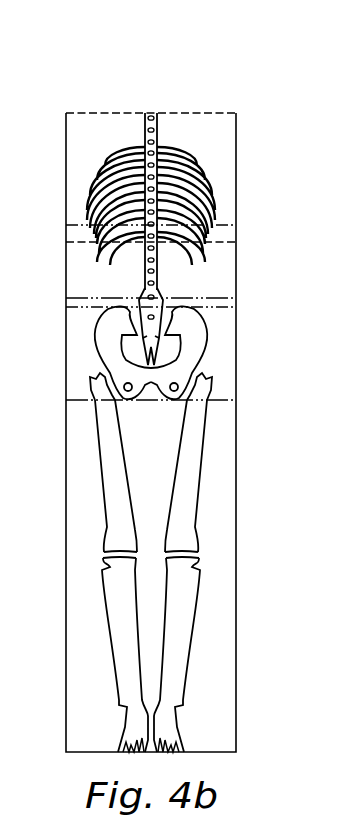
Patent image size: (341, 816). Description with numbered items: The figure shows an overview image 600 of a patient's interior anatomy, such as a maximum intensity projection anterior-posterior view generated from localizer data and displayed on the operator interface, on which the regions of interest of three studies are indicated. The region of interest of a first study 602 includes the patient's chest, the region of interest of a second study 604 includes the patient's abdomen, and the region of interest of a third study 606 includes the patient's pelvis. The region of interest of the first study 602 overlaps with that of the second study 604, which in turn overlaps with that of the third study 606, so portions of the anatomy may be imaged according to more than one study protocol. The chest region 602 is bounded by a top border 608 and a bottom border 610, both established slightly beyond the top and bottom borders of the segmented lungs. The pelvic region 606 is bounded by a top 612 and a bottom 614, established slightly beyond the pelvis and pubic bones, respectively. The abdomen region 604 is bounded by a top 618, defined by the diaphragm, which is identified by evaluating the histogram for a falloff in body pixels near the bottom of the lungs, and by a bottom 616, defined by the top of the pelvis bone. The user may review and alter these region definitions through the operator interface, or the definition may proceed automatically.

The overview image 600 is at (177, 107).
The first study region of interest 602 is at (240, 113).
The second study region of interest 604 is at (257, 226).
The third study region of interest 606 is at (240, 305).
The top border of chest region 608 is at (139, 113).
The bottom border of chest region 610 is at (80, 243).
The top of pelvic region 612 is at (93, 298).
The bottom of pelvic region 614 is at (82, 402).
The bottom of abdomen 616 is at (82, 308).
The top of abdomen 618 is at (79, 225).